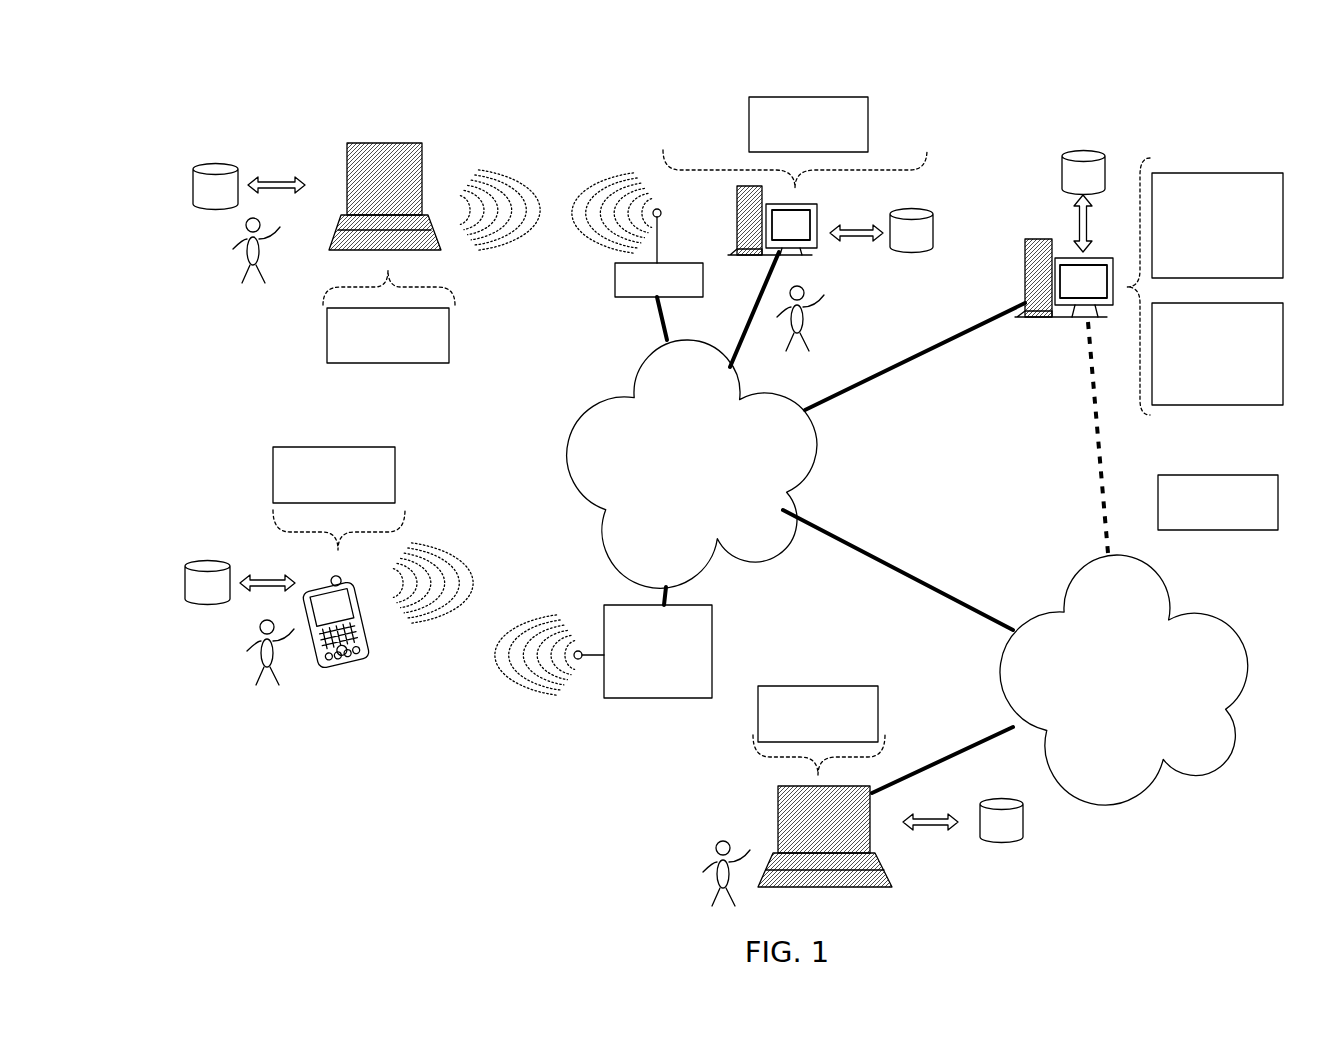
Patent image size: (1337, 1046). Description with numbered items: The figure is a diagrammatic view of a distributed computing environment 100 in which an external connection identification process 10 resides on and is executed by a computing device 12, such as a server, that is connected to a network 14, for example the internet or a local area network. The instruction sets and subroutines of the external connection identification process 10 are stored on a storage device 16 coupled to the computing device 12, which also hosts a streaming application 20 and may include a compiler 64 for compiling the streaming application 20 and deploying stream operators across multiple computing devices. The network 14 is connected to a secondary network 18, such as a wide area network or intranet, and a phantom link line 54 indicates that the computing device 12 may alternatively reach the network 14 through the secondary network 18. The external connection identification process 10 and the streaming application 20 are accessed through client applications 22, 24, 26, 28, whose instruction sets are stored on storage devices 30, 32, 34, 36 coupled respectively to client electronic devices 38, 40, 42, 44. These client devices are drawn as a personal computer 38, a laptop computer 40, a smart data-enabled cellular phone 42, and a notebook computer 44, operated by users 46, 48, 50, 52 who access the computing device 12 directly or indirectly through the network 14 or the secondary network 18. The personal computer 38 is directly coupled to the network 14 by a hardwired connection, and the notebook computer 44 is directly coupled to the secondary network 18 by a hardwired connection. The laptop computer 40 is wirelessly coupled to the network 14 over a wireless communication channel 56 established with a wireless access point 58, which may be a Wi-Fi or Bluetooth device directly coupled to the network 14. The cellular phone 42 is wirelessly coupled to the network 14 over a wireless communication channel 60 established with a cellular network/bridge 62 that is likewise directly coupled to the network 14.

The system / environment 100 is at (212, 102).
The external connection identification process 10 is at (1283, 238).
The computing device 12 is at (1020, 262).
The network 14 is at (692, 464).
The storage device 16 is at (1083, 173).
The secondary network 18 is at (1124, 680).
The streaming application 20 is at (1283, 340).
The client application 22 is at (749, 132).
The client application 24 is at (449, 333).
The client application 26 is at (395, 472).
The client application 28 is at (878, 717).
The storage device 30 is at (911, 231).
The storage device 32 is at (215, 187).
The storage device 34 is at (207, 583).
The storage device 36 is at (1001, 821).
The client electronic device 38 is at (817, 220).
The client electronic device 40 is at (423, 173).
The client electronic device 42 is at (370, 627).
The client electronic device 44 is at (870, 830).
The user 46 is at (815, 302).
The user 48 is at (222, 239).
The user 50 is at (243, 637).
The user 52 is at (692, 865).
The phantom link line 54 is at (1095, 425).
The wireless communication channel 56 is at (565, 163).
The wireless access point 58 is at (612, 280).
The wireless communication channel 60 is at (497, 605).
The cellular network/bridge 62 is at (713, 618).
The compiler 64 is at (1278, 503).